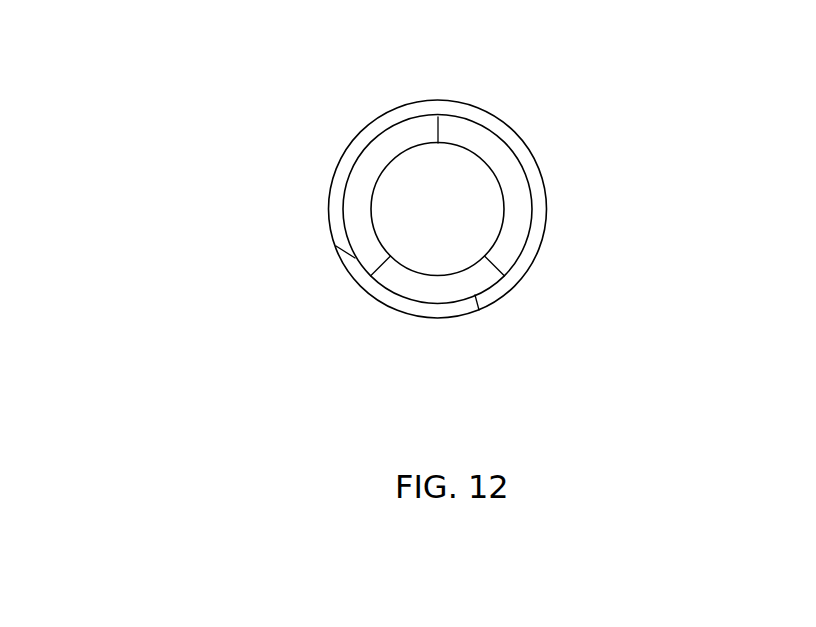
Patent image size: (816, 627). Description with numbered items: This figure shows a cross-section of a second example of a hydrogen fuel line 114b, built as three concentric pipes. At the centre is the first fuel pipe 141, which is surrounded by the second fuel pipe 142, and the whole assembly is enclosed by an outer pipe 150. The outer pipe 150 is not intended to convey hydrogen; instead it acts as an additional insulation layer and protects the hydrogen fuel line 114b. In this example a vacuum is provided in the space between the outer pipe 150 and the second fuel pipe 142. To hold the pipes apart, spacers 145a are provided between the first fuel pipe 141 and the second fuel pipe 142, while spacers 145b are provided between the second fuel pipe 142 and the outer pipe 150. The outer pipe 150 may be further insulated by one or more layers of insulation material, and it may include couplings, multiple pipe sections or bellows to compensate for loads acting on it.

The hydrogen fuel line 114b is at (250, 177).
The first fuel pipe 141 is at (476, 152).
The second fuel pipe 142 is at (520, 160).
The spacers 145a is at (430, 132).
The spacers 145b is at (507, 138).
The outer pipe 150 is at (346, 146).